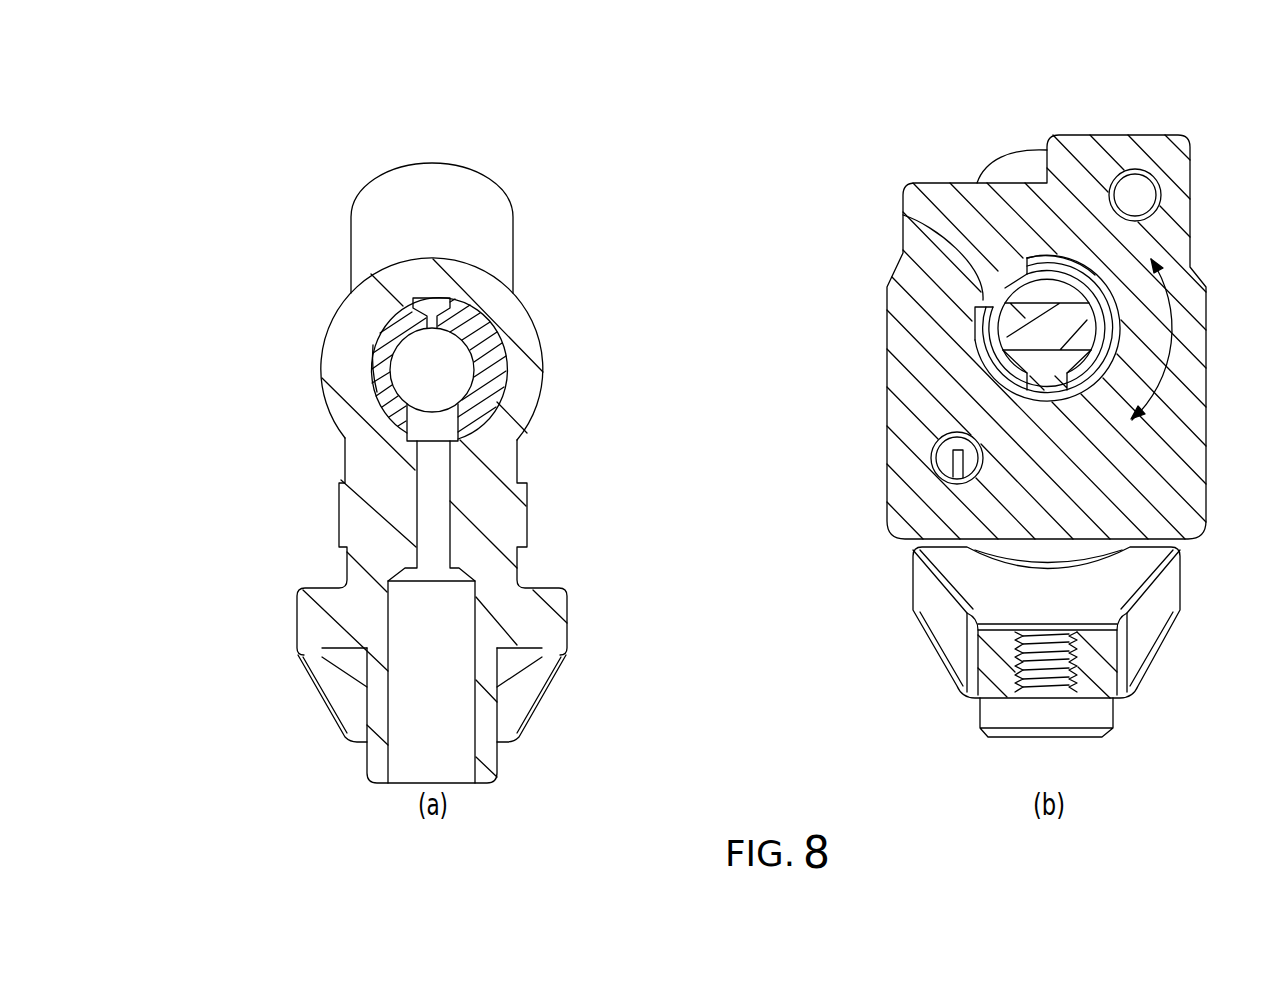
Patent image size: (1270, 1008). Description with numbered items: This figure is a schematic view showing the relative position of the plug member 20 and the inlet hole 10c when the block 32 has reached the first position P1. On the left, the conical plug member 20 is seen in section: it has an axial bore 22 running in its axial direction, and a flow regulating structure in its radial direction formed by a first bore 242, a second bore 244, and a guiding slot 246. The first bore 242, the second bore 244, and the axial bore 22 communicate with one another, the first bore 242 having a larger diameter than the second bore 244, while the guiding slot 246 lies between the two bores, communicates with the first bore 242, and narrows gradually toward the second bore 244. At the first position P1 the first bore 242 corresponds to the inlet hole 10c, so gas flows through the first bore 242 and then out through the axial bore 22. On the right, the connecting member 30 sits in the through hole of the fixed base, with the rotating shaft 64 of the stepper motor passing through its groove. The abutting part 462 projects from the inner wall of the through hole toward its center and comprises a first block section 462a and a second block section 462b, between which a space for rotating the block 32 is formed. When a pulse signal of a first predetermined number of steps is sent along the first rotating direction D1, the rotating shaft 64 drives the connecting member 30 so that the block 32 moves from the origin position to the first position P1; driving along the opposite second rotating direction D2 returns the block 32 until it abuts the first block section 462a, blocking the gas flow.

The inlet hole 10c is at (440, 452).
The plug member 20 is at (498, 365).
The axial bore 22 is at (413, 357).
The first bore 242 is at (423, 428).
The second bore 244 is at (434, 302).
The guiding slot 246 is at (367, 377).
The connecting member 30 is at (995, 340).
The block 32 is at (1027, 373).
The abutting part 462 is at (923, 110).
The first block section 462a is at (986, 305).
The second block section 462b is at (1024, 256).
The rotating shaft 64 is at (1063, 325).
The first position P1 is at (1037, 391).
The first rotating direction D1 is at (1186, 330).
The second rotating direction D2 is at (1190, 404).